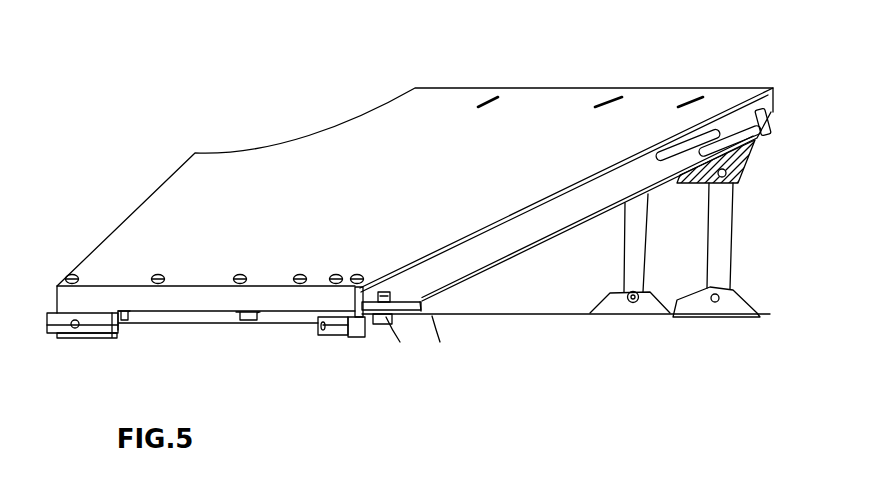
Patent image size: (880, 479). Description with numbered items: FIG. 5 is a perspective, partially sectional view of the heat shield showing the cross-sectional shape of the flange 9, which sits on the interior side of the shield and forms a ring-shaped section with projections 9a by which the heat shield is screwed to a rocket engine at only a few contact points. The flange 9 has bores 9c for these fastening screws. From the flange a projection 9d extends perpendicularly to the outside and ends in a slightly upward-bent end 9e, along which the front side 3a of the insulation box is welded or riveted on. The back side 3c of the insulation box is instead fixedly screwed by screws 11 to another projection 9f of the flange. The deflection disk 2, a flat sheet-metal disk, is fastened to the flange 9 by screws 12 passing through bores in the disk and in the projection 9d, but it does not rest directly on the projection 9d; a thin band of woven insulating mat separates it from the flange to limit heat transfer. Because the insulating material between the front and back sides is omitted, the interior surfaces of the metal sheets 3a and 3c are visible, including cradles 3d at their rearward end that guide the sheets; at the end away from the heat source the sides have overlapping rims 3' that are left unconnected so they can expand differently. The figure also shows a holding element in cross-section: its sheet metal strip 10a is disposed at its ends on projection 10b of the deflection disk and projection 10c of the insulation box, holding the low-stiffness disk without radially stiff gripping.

The deflection disk 2 is at (540, 318).
The overlapping rims 3' is at (782, 103).
The front side of the insulation box 3a is at (540, 256).
The back side of the insulation box 3c is at (447, 105).
The cradles 3d is at (748, 133).
The flange 9 is at (97, 348).
The projections 9a is at (48, 336).
The bores 9c is at (75, 324).
The projection 9d is at (398, 302).
The upward-bent end 9e is at (425, 312).
The projection 9f is at (372, 290).
The sheet metal strip 10a is at (722, 218).
The projection 10b is at (747, 155).
The projection 10c is at (750, 312).
The screws 11 is at (156, 275).
The screws 12 is at (384, 326).